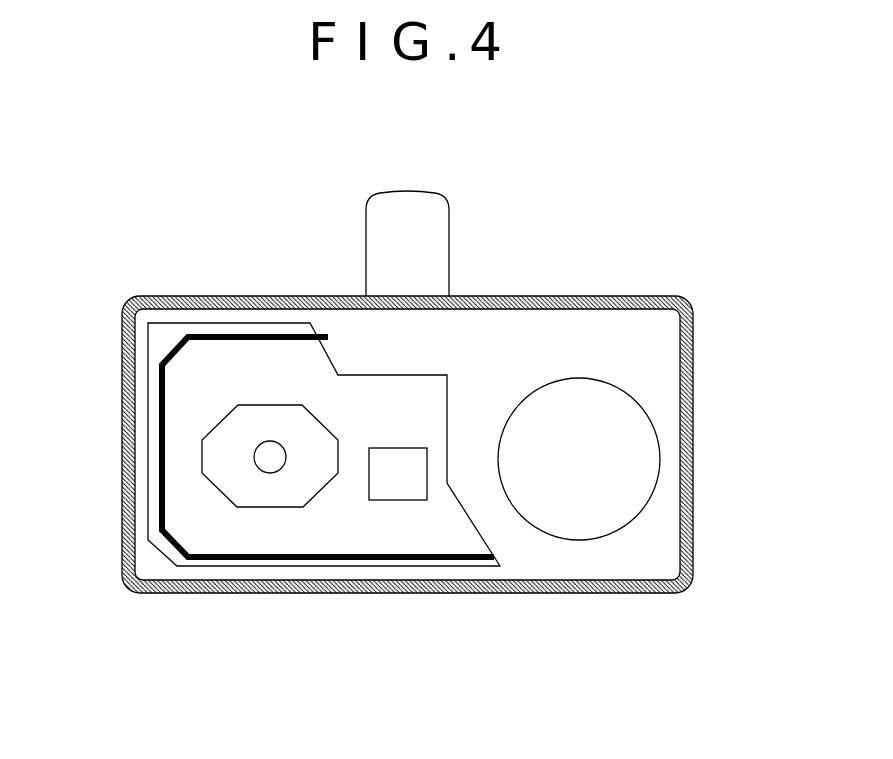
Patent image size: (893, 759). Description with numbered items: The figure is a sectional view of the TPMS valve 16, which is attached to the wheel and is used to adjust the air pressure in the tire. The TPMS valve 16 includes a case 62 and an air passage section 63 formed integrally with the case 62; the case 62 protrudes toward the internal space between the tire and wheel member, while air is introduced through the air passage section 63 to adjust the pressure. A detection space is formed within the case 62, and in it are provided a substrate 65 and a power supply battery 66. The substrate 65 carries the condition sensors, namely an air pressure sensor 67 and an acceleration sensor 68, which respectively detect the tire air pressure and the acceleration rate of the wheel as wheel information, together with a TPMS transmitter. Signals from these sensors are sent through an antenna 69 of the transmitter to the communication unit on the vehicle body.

The TPMS valve 16 is at (603, 170).
The case 62 is at (635, 296).
The air passage section 63 is at (450, 233).
The substrate 65 is at (375, 385).
The power supply battery 66 is at (650, 442).
The air pressure sensor 67 is at (257, 500).
The acceleration sensor 68 is at (397, 500).
The antenna 69 is at (160, 422).